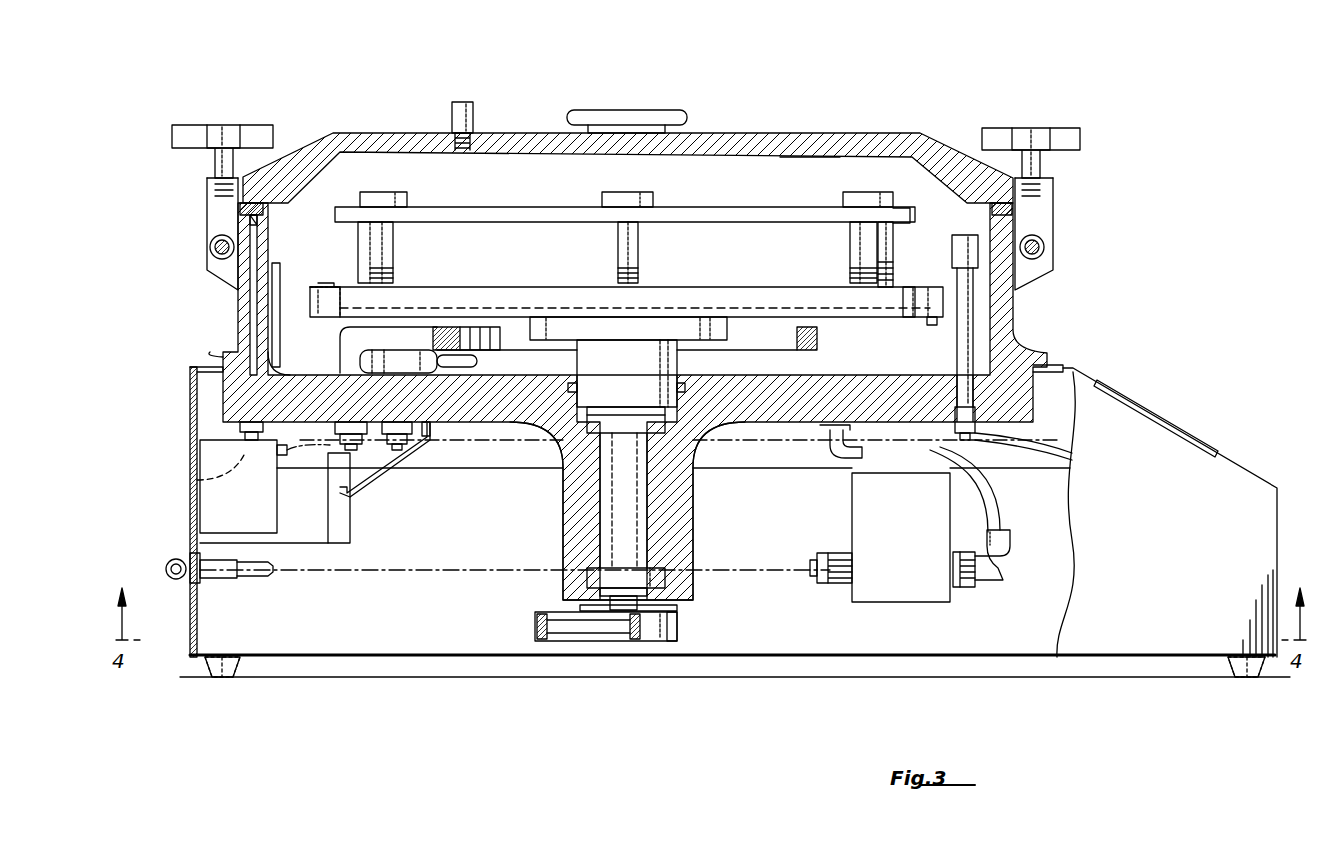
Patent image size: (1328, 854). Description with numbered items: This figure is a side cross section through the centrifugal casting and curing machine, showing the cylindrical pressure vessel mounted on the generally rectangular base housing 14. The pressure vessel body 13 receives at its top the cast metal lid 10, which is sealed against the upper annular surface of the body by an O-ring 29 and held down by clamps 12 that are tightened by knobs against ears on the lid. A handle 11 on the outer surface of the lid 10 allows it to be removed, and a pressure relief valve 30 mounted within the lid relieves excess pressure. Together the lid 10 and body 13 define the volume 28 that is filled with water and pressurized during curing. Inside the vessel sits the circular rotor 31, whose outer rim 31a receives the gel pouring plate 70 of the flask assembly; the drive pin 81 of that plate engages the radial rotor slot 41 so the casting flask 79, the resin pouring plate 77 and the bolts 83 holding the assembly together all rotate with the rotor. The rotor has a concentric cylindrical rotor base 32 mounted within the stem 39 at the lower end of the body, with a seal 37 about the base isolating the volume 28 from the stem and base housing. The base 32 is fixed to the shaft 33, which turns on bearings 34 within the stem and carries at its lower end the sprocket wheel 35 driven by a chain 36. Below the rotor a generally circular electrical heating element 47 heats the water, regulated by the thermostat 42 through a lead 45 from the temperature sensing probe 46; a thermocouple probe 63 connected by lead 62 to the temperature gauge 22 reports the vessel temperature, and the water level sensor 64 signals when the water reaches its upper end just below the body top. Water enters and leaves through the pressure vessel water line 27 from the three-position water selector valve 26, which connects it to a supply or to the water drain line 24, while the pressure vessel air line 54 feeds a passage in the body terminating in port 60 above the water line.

The lid 10 is at (778, 133).
The handle 11 is at (685, 112).
The clamps 12 is at (172, 132).
The pressure vessel body 13 is at (1020, 330).
The base housing 14 is at (192, 412).
The temperature gauge 22 is at (1200, 442).
The water drain line 24 is at (237, 575).
The water selector valve 26 is at (915, 600).
The pressure vessel water line 27 is at (997, 575).
The volume 28 is at (803, 160).
The O-ring 29 is at (1010, 208).
The pressure relief valve 30 is at (458, 112).
The rotor 31 is at (935, 318).
The outer rim 31a is at (938, 300).
The rotor base 32 is at (672, 365).
The drive shaft 33 is at (625, 515).
The bearings 34 is at (600, 445).
The sprocket wheel 35 is at (675, 628).
The chain 36 is at (540, 622).
The seal 37 is at (685, 390).
The stem 39 is at (563, 492).
The rotor slot 41 is at (325, 296).
The thermostat 42 is at (345, 530).
The lead 45 is at (375, 484).
The temperature sensing probe 46 is at (470, 363).
The electrical heating element 47 is at (818, 342).
The pressure vessel air line 54 is at (197, 480).
The port 60 is at (262, 226).
The lead 62 is at (305, 437).
The thermocouple probe 63 is at (278, 320).
The water level sensor 64 is at (1000, 320).
The gel pouring plate 70 is at (890, 265).
The resin pouring plate 77 is at (513, 210).
The casting flask 79 is at (540, 254).
The drive pin 81 is at (328, 286).
The bolts 83 is at (383, 250).